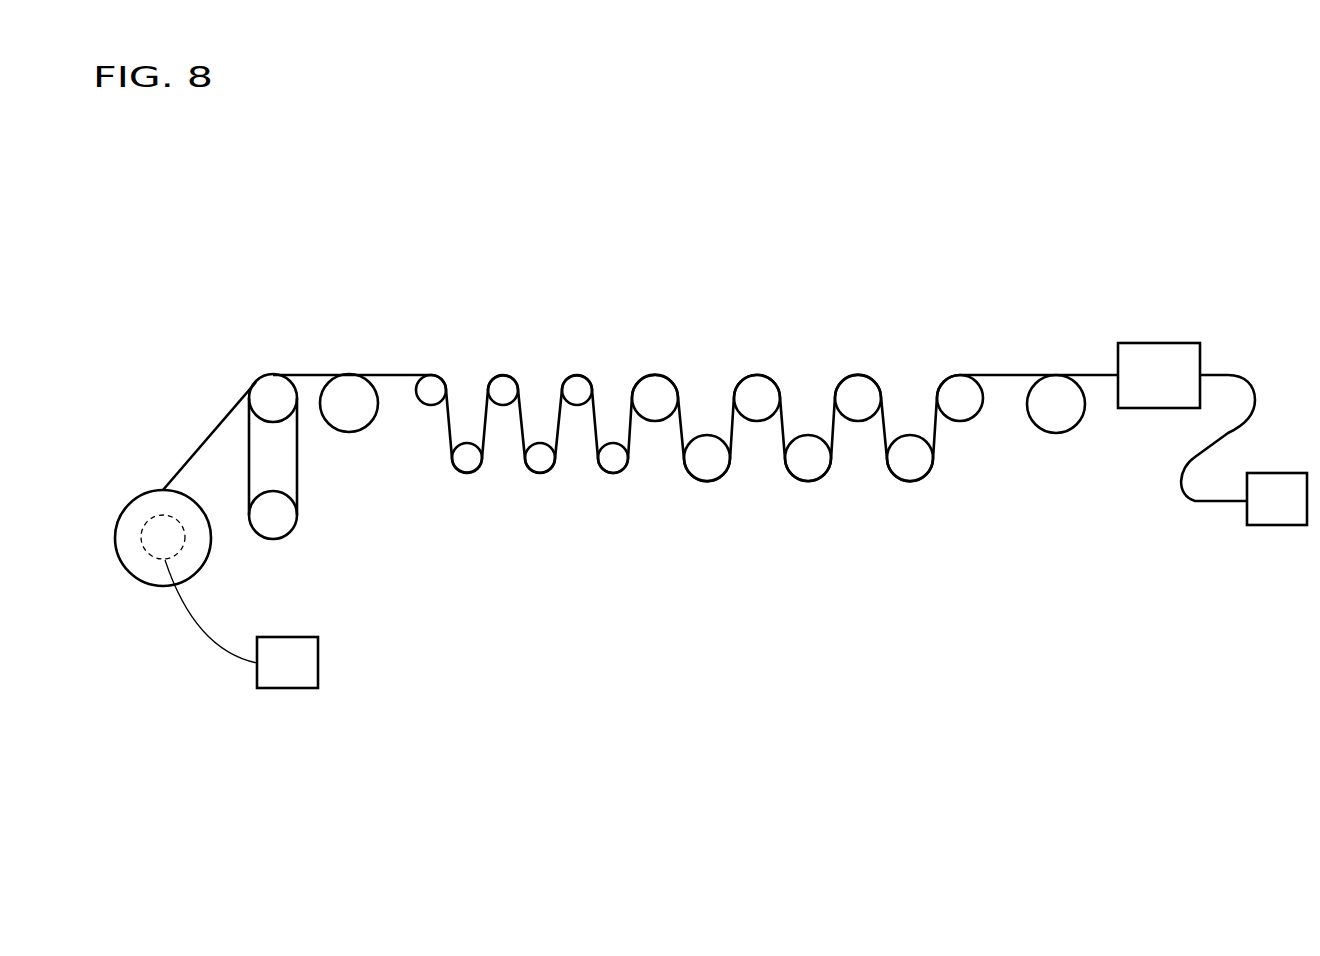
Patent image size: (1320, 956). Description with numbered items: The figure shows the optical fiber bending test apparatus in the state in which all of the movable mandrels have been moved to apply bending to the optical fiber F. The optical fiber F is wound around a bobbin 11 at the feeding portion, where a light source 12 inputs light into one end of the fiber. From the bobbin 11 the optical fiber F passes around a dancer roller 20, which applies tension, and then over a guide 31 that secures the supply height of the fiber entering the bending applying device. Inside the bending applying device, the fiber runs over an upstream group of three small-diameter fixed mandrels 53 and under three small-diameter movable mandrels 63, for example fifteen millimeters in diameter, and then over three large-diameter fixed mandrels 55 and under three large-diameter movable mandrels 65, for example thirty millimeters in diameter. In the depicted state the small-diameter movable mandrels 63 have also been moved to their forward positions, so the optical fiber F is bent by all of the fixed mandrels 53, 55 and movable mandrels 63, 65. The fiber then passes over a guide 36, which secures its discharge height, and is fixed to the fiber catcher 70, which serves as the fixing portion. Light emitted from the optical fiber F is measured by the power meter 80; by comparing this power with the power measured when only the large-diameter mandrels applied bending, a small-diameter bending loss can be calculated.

The optical fiber F is at (207, 437).
The bobbin 11 is at (150, 503).
The light source 12 is at (302, 662).
The dancer roller 20 is at (257, 370).
The guide 31 is at (348, 422).
The fixed mandrels 53 is at (425, 388).
The movable mandrels 63 is at (468, 455).
The fixed mandrels 55 is at (952, 397).
The movable mandrels 65 is at (708, 462).
The guide 36 is at (1057, 420).
The fiber catcher 70 is at (1157, 350).
The power meter 80 is at (1278, 516).